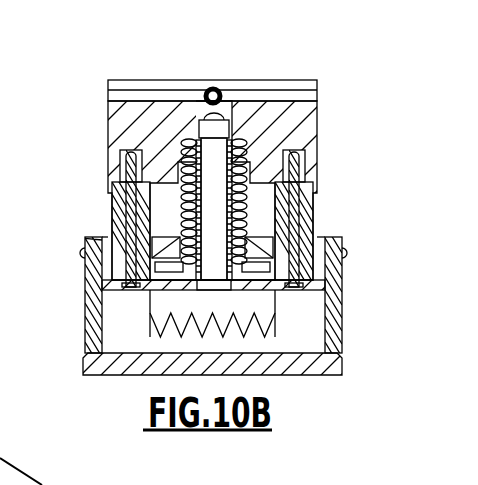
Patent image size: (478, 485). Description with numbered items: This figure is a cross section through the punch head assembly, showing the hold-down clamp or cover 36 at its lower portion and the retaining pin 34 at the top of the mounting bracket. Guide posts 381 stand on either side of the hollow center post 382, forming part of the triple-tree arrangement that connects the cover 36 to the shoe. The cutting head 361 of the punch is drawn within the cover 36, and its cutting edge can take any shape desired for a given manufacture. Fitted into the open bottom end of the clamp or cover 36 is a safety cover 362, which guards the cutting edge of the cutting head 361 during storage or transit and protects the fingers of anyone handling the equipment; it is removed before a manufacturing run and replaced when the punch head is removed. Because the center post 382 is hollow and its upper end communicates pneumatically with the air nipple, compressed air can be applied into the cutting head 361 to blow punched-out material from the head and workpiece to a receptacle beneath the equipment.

The retaining pin 34 is at (212, 78).
The hold-down clamp or cover 36 is at (342, 302).
The cutting head 361 is at (276, 310).
The safety cover 362 is at (317, 376).
The guide post 381 is at (112, 218).
The center post 382 is at (232, 147).